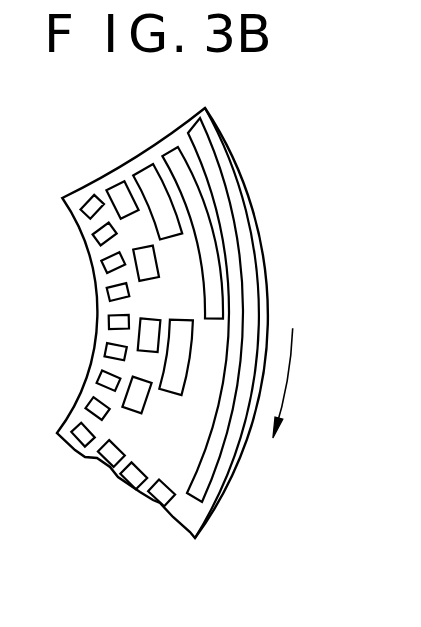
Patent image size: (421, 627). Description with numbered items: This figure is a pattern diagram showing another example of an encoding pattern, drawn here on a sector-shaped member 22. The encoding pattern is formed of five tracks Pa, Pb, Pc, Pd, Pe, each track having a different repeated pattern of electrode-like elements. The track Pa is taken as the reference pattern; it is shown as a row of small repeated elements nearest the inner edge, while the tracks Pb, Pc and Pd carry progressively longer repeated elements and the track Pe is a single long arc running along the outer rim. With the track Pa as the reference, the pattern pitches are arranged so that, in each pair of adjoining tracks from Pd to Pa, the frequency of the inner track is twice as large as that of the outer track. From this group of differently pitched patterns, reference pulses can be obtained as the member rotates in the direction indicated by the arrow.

The sensor substrate 22 is at (257, 219).
The track Pa is at (80, 194).
The track Pb is at (114, 180).
The track Pc is at (142, 167).
The track Pd is at (168, 150).
The track Pe is at (205, 122).